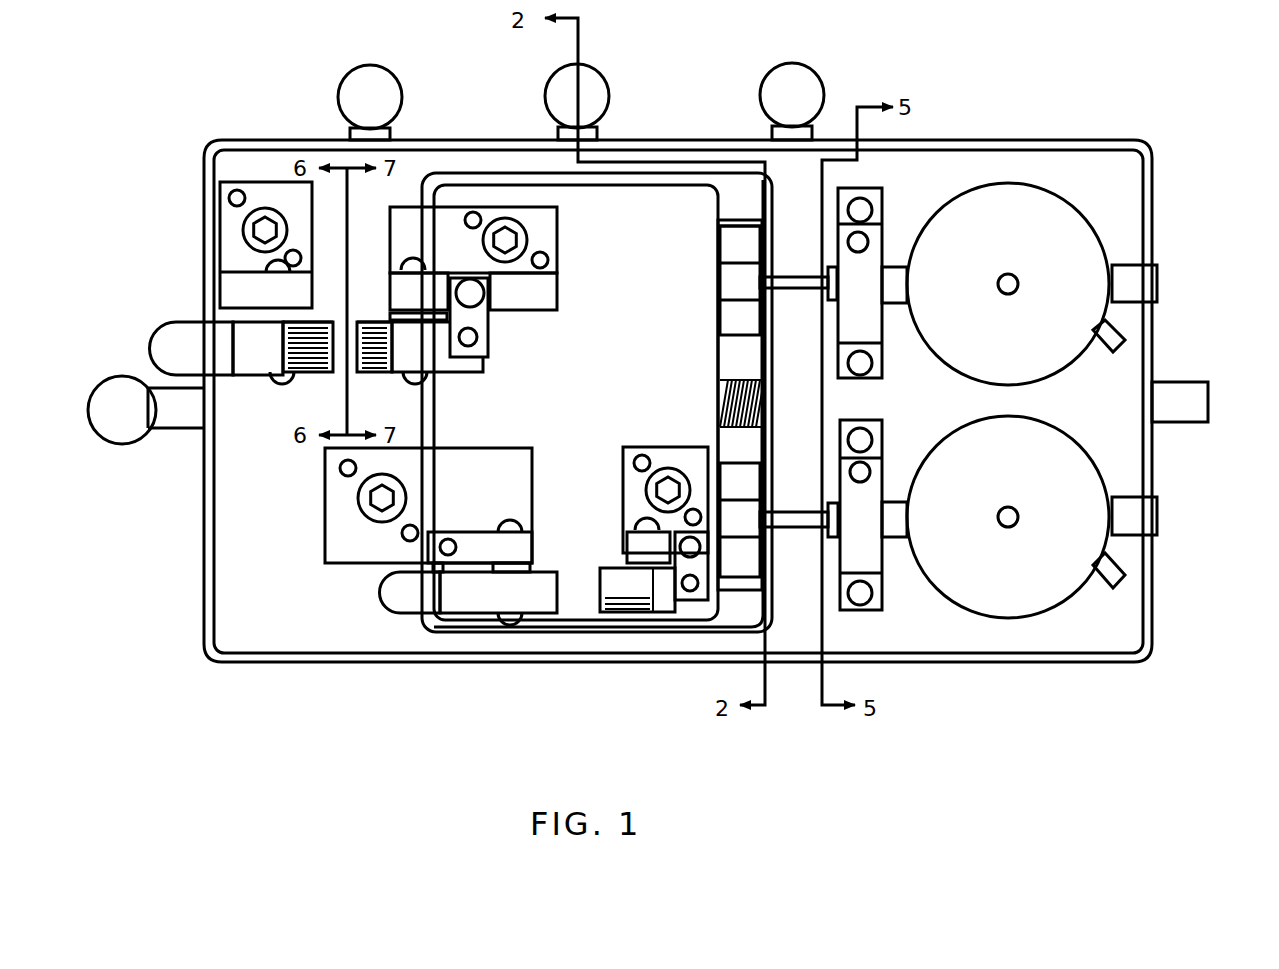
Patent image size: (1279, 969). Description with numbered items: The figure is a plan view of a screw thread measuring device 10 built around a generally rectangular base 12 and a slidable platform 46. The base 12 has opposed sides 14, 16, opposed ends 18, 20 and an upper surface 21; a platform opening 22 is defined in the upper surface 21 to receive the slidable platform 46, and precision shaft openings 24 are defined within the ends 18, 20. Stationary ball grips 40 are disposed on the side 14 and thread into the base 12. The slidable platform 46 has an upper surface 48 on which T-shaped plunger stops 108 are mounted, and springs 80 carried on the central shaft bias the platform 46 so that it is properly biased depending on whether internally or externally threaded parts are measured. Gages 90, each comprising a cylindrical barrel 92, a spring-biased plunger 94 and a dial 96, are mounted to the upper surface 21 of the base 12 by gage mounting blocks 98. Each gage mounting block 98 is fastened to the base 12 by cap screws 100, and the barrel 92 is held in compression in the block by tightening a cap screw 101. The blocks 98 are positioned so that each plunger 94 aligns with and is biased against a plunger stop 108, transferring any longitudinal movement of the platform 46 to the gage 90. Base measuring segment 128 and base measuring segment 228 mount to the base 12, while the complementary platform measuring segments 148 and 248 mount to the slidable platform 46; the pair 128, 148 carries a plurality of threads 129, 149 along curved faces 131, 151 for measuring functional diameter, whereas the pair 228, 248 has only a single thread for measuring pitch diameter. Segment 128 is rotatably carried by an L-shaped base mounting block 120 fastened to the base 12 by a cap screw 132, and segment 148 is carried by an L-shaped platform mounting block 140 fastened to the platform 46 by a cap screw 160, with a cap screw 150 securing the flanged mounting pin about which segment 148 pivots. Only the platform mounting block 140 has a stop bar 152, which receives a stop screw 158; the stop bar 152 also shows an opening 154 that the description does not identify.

The screw thread measuring device 10 is at (196, 74).
The base 12 is at (672, 387).
The side 14 is at (947, 140).
The side 16 is at (980, 664).
The end 18 is at (205, 553).
The end 20 is at (1153, 328).
The upper surface 21 is at (1115, 610).
The platform opening 22 is at (618, 351).
The precision shaft openings 24 is at (740, 223).
The stationary ball grips 40 is at (356, 68).
The slidable platform 46 is at (560, 186).
The upper surface 48 is at (585, 202).
The springs 80 is at (752, 392).
The gages 90 is at (1020, 180).
The cylindrical barrel 92 is at (900, 268).
The spring-biased plunger 94 is at (820, 286).
The dial 96 is at (1016, 353).
The gage mounting blocks 98 is at (855, 401).
The cap screws 100 is at (862, 200).
The cap screw 101 is at (848, 241).
The T-shaped plunger stops 108 is at (740, 333).
The base mounting block 120 is at (310, 203).
The base measuring segment 128 is at (310, 378).
The threads 129 is at (290, 356).
The curved face 131 is at (323, 320).
The cap screw 132 is at (264, 206).
The platform mounting block 140 is at (518, 263).
The platform measuring segment 148 is at (382, 376).
The threads 149 is at (376, 347).
The cap screw 150 is at (272, 268).
The curved face 151 is at (362, 320).
The stop bar 152 is at (503, 329).
The hole 154 is at (470, 306).
The stop screw 158 is at (470, 340).
The cap screw 160 is at (532, 238).
The base measuring segment 228 is at (397, 618).
The platform measuring segment 248 is at (617, 616).